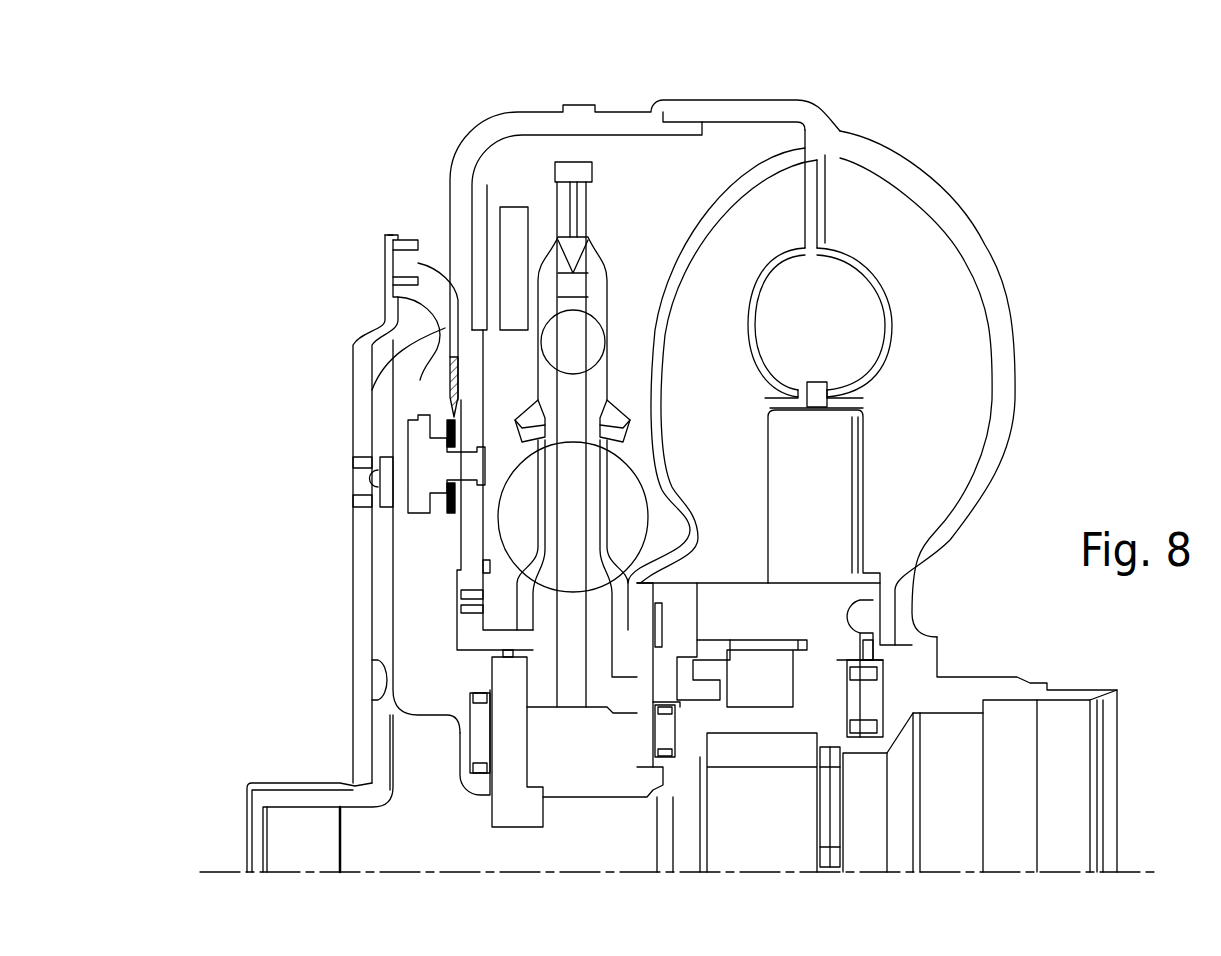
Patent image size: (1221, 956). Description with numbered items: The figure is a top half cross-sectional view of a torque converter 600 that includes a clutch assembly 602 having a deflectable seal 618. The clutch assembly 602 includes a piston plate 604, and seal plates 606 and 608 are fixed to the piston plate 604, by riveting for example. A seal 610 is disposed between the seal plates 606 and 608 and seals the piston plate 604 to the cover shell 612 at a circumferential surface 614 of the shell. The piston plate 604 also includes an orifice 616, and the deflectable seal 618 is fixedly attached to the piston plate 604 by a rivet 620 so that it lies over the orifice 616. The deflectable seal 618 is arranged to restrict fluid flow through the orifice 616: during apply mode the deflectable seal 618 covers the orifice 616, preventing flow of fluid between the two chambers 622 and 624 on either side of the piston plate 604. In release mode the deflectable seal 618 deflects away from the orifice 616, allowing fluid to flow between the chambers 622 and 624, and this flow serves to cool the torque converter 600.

The torque converter 600 is at (893, 98).
The clutch assembly 602 is at (444, 142).
The piston plate 604 is at (477, 543).
The seal plate 606 is at (418, 263).
The seal plate 608 is at (383, 297).
The seal 610 is at (445, 386).
The cover shell 612 is at (383, 440).
The circumferential surface 614 is at (448, 357).
The orifice 616 is at (470, 595).
The deflectable seal 618 is at (480, 612).
The rivet 620 is at (480, 567).
The chamber 622 is at (643, 382).
The chamber 624 is at (462, 697).